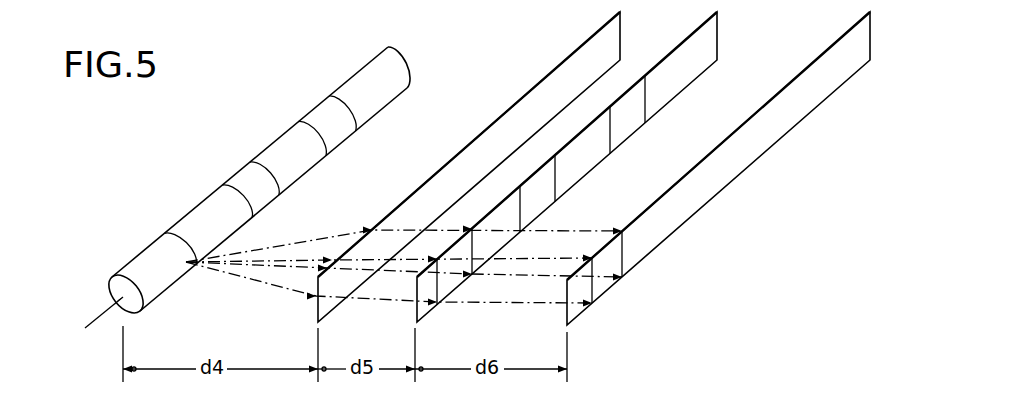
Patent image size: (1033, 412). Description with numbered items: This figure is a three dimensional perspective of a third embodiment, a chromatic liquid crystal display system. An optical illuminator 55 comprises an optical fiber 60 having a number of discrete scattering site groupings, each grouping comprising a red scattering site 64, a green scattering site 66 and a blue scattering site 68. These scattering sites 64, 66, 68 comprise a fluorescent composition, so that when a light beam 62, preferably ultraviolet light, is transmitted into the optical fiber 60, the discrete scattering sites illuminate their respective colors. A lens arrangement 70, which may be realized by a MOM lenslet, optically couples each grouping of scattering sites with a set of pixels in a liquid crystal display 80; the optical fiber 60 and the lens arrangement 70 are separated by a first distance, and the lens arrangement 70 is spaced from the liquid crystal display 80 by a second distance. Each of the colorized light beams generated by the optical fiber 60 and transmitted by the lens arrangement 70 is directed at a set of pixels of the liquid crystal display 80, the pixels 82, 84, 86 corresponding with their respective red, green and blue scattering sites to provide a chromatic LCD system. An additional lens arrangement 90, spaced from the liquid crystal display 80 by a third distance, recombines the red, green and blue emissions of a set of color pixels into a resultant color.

The optical illuminator 55 is at (128, 268).
The optical fiber 60 is at (300, 176).
The light beam 62 is at (100, 313).
The red scattering site 64 is at (163, 241).
The green scattering site 66 is at (247, 173).
The blue scattering site 68 is at (330, 102).
The lens arrangement 70 is at (608, 40).
The liquid crystal display 80 is at (710, 40).
The pixel 82 is at (455, 254).
The pixel 84 is at (540, 208).
The pixel 86 is at (640, 120).
The additional lens arrangement 90 is at (830, 80).